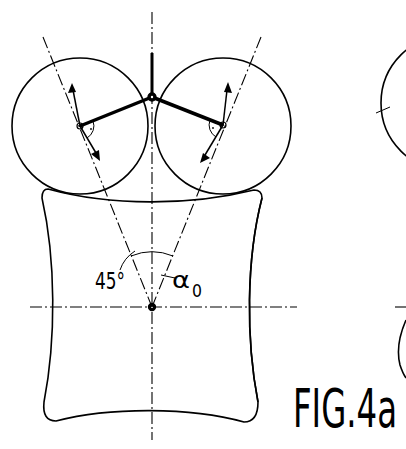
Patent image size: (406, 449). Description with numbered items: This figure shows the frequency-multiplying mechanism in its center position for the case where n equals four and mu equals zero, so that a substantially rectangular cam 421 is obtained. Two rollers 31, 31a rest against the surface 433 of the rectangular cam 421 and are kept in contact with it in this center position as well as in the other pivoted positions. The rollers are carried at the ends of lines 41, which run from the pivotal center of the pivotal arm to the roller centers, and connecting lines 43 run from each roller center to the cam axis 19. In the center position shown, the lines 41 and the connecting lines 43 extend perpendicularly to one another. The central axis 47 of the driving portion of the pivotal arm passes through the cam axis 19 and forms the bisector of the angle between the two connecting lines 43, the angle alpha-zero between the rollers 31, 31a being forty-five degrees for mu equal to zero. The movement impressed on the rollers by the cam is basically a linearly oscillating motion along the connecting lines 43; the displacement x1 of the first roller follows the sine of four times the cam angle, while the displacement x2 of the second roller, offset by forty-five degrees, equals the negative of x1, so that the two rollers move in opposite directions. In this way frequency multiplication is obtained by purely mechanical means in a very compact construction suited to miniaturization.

The cam axis 19 is at (155, 310).
The roller 31 is at (80, 70).
The roller 31a is at (218, 66).
The connecting line 41 is at (115, 110).
The connecting line 43 is at (120, 230).
The central axis 47 is at (154, 77).
The rectangular cam 421 is at (243, 248).
The surface 433 is at (250, 293).
The first roller displacement x1 is at (80, 146).
The second roller displacement x2 is at (230, 100).